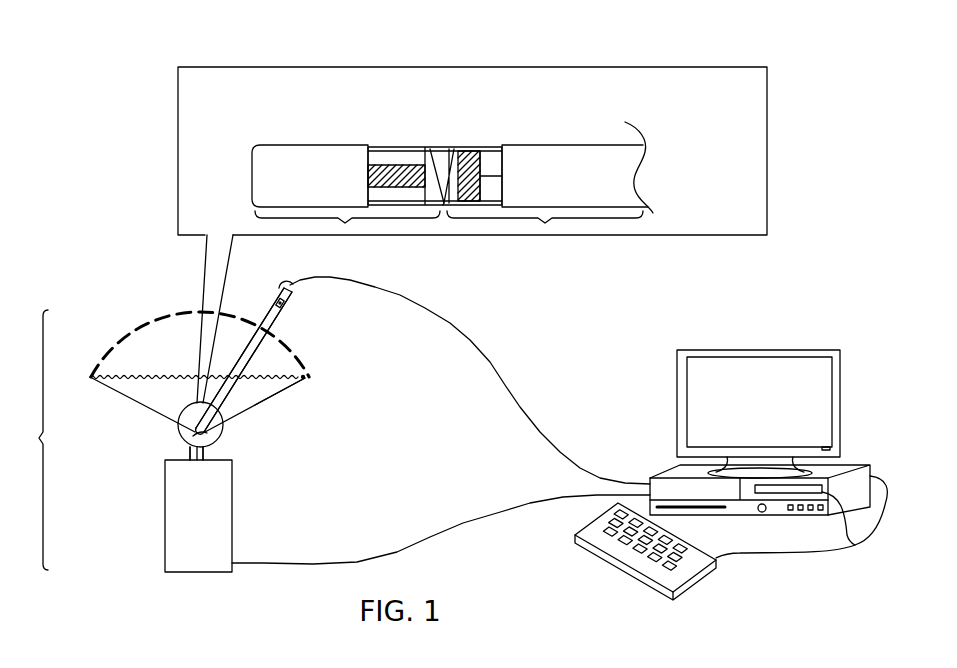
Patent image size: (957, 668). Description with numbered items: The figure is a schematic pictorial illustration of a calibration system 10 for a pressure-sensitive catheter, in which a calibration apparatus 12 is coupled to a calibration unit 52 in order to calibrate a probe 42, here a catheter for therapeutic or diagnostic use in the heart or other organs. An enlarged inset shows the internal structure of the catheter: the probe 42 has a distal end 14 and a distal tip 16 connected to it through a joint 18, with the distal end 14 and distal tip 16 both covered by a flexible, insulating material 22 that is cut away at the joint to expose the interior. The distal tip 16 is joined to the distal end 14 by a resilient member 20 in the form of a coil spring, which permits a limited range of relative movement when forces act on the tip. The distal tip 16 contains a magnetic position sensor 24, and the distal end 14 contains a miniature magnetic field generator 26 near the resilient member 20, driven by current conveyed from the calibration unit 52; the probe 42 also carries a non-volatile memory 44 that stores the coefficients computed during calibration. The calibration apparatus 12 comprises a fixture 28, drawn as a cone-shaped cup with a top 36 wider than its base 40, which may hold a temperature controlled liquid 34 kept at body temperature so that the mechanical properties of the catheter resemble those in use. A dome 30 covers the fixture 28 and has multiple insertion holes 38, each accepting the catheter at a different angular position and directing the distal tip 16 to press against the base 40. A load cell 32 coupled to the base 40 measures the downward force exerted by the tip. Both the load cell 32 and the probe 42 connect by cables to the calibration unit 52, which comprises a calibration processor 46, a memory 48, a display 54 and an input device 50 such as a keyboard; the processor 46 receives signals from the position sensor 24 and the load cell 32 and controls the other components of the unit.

The calibration system 10 is at (580, 317).
The calibration apparatus 12 is at (32, 440).
The distal end 14 is at (152, 55).
The distal tip 16 is at (345, 223).
The joint 18 is at (443, 205).
The resilient member 20 is at (450, 148).
The flexible insulating material 22 is at (315, 147).
The magnetic position sensor 24 is at (385, 166).
The magnetic field generator 26 is at (467, 153).
The fixture 28 is at (264, 405).
The dome 30 is at (293, 360).
The load cell 32 is at (232, 515).
The temperature controlled liquid 34 is at (281, 386).
The top 36 is at (90, 380).
The insertion holes 38 is at (102, 355).
The base 40 is at (193, 448).
The probe 42 is at (281, 320).
The non-volatile memory 44 is at (294, 292).
The calibration processor 46 is at (673, 490).
The memory 48 is at (860, 543).
The input device 50 is at (693, 585).
The calibration unit 52 is at (860, 367).
The display 54 is at (787, 363).